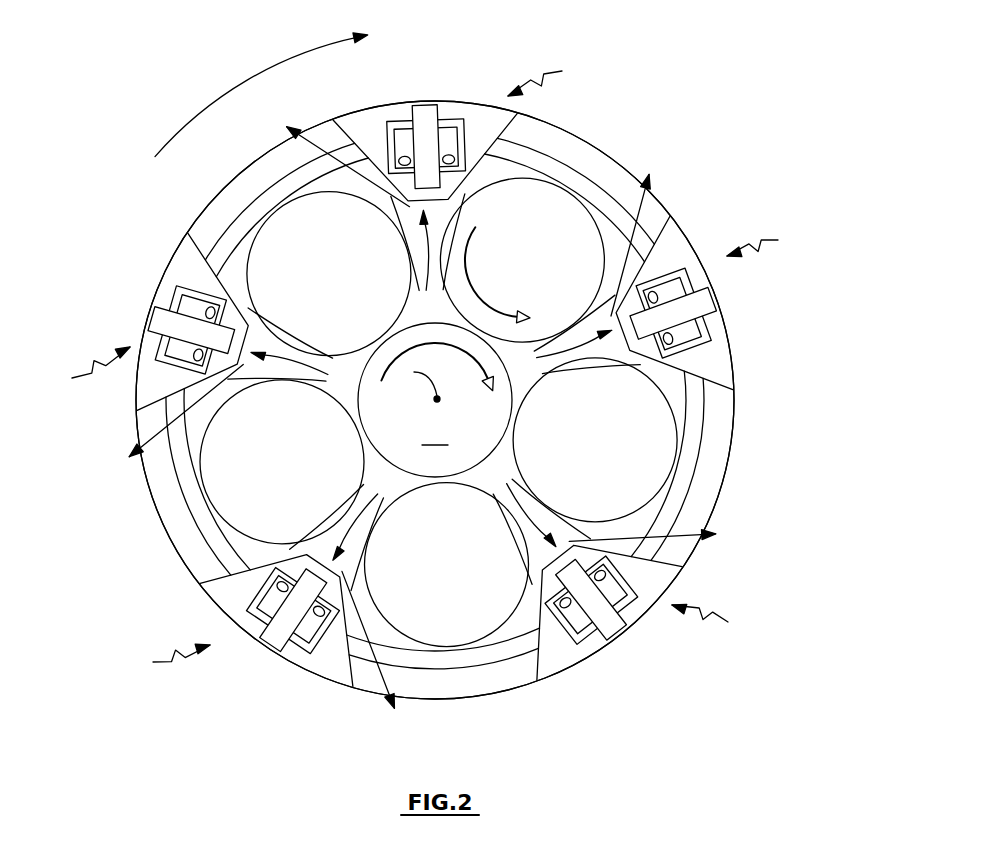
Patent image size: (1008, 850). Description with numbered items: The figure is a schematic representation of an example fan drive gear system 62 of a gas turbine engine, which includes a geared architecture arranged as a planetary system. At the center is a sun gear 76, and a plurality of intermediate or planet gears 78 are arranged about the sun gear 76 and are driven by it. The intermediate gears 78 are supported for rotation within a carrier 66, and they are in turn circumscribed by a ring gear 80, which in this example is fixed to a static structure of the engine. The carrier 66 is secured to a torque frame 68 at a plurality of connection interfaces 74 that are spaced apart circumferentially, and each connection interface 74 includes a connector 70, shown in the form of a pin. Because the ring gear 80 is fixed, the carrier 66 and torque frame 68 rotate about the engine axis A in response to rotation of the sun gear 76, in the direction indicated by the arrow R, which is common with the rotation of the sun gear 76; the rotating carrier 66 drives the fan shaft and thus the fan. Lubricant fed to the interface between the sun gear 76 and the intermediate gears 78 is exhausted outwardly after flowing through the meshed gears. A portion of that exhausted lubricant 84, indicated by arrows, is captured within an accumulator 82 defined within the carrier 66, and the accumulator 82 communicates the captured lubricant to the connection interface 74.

The fan drive gear system 62 is at (745, 140).
The carrier 66 is at (715, 462).
The torque frame 68 is at (693, 333).
The connector 70 is at (430, 114).
The connection interface 74 is at (424, 366).
The sun gear 76 is at (435, 400).
The intermediate gear 78 is at (342, 286).
The ring gear 80 is at (540, 163).
The accumulator 82 is at (235, 553).
The exhausted lubricant 84 is at (306, 130).